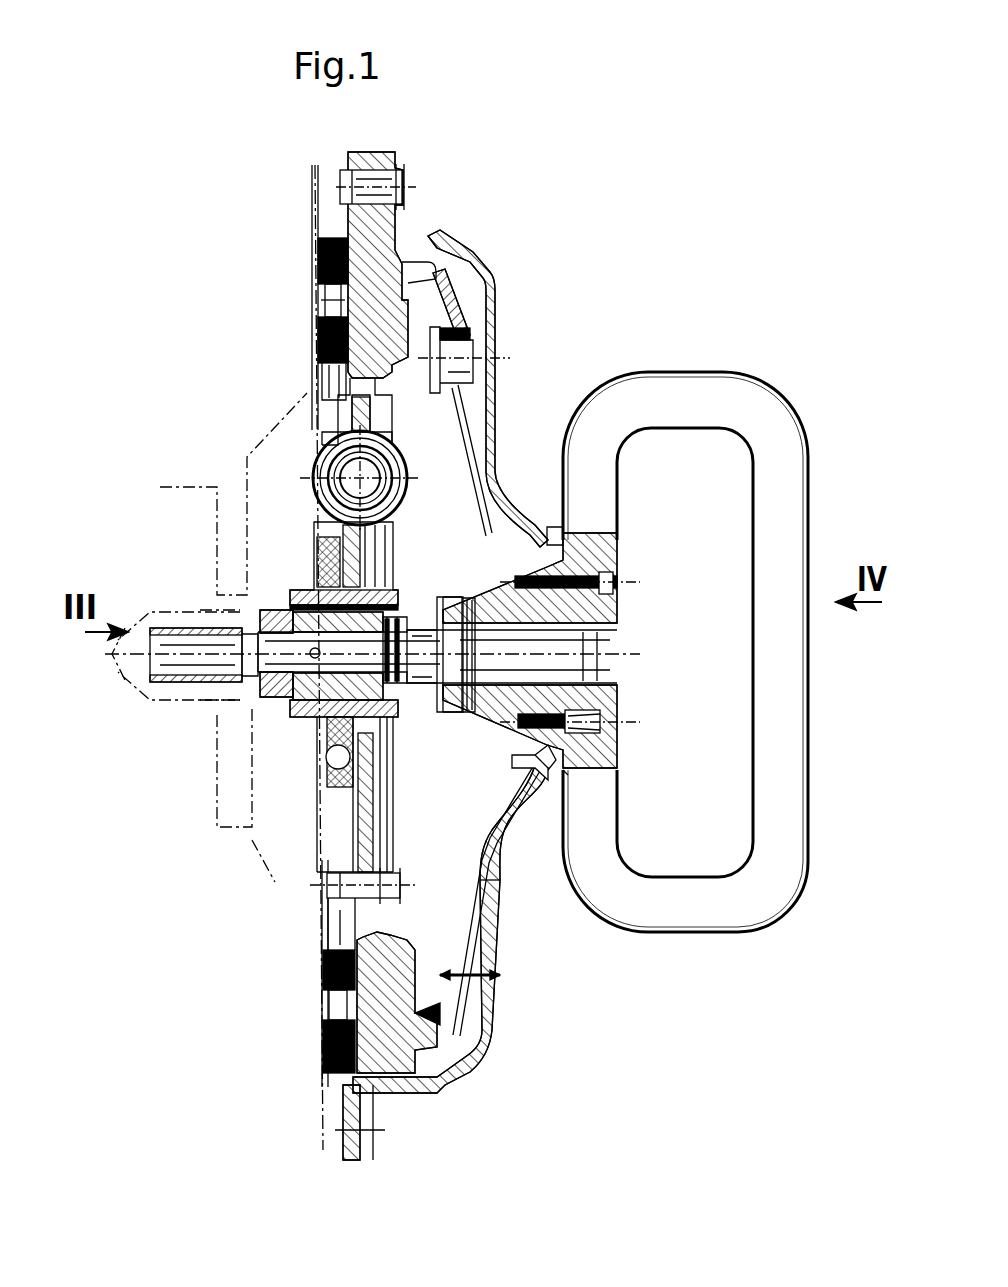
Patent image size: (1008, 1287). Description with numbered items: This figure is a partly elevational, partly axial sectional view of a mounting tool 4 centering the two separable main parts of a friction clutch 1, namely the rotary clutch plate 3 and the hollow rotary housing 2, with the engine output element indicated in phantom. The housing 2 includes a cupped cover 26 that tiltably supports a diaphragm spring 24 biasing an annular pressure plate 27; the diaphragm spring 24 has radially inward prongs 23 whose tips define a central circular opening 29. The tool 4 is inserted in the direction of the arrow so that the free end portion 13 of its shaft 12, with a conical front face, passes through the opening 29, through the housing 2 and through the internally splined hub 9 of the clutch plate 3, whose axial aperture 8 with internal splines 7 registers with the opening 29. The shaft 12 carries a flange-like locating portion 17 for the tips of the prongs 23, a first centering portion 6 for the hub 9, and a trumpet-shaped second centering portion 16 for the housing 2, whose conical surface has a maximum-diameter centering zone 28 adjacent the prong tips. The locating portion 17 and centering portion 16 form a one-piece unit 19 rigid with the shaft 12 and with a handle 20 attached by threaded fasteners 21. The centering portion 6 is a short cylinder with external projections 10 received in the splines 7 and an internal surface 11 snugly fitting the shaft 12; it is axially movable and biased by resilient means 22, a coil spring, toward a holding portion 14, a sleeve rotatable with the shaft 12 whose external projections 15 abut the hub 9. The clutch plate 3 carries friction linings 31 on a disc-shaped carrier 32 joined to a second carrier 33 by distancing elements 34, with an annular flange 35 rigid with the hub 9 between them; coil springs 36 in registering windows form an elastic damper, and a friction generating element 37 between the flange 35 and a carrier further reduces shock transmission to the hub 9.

The friction clutch 1 is at (466, 202).
The housing 2 is at (472, 646).
The clutch plate 3 is at (323, 873).
The mounting tool 4 is at (782, 762).
The centering portion 6 is at (280, 700).
The internal splines 7 is at (437, 540).
The axial aperture 8 is at (540, 465).
The hub 9 is at (297, 712).
The external projections 10 is at (300, 593).
The internal surface 11 is at (477, 877).
The shaft 12 is at (623, 640).
The free end portion 13 is at (163, 690).
The holding portion 14 is at (267, 613).
The external projections 15 is at (283, 610).
The centering portion 16 is at (563, 537).
The locating portion 17 is at (570, 780).
The prefabricated unit 19 is at (560, 698).
The handle 20 is at (783, 688).
The threaded fasteners 21 is at (620, 575).
The resilient means 22 is at (540, 770).
The prongs 23 is at (573, 763).
The diaphragm spring 24 is at (480, 1017).
The cover 26 is at (478, 262).
The pressure plate 27 is at (399, 166).
The centering zone 28 is at (600, 725).
The opening 29 is at (522, 758).
The friction linings 31 is at (342, 248).
The carrier 32 is at (323, 953).
The second carrier 33 is at (323, 990).
The distancing elements 34 is at (323, 903).
The annular flange 35 is at (357, 827).
The coil springs 36 is at (322, 445).
The friction generating element 37 is at (497, 413).